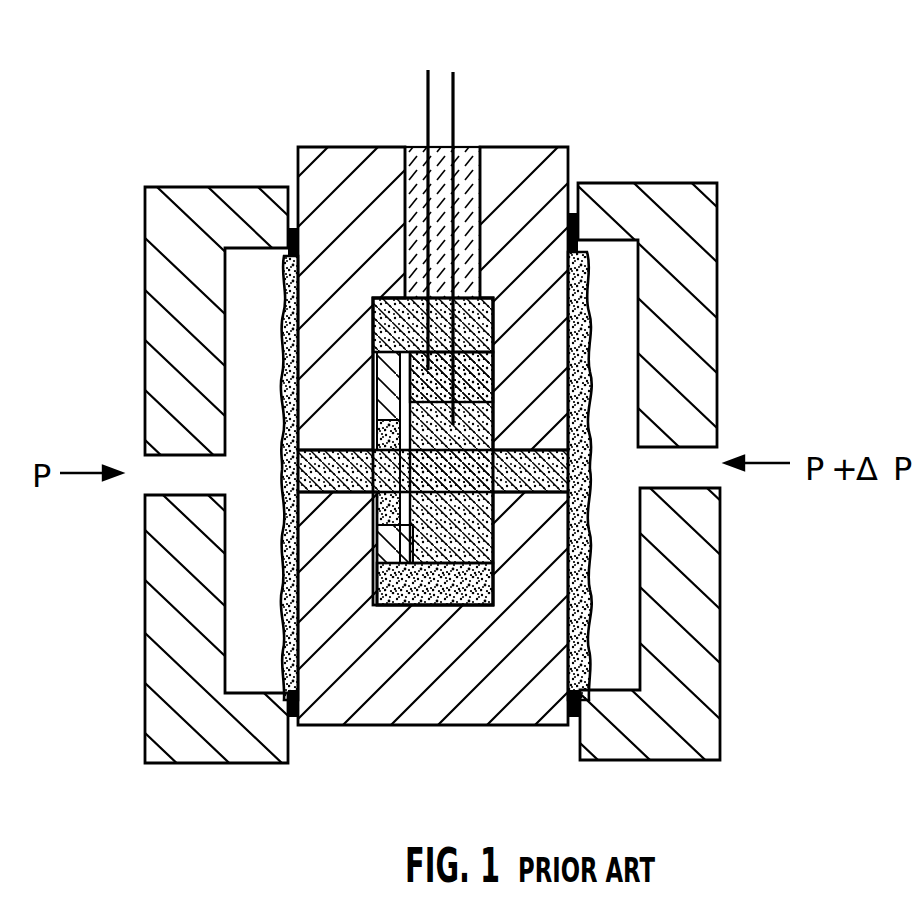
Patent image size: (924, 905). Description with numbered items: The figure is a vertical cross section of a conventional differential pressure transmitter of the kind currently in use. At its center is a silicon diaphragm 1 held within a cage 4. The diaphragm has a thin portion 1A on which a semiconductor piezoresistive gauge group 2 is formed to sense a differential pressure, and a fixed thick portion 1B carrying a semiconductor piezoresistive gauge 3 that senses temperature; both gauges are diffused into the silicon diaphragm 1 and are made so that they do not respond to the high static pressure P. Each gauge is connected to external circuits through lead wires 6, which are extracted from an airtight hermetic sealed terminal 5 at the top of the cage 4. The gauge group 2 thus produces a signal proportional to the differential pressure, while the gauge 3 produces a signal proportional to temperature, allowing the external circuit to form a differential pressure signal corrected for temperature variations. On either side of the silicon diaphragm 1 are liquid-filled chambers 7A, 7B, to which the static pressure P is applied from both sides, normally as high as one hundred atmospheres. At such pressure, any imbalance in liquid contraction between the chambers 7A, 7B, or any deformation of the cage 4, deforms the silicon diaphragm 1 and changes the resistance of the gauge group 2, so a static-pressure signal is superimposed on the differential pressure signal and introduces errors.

The silicon diaphragm 1 is at (425, 590).
The thin portion 1A is at (440, 575).
The fixed thick portion 1B is at (395, 352).
The semiconductor piezoresistive gauge group 2 is at (450, 470).
The semiconductor piezoresistive gauge 3 is at (480, 378).
The cage 4 is at (372, 727).
The hermetic sealed terminal 5 is at (463, 145).
The lead wires 6 is at (427, 100).
The chamber 7A is at (288, 462).
The chamber 7B is at (460, 597).